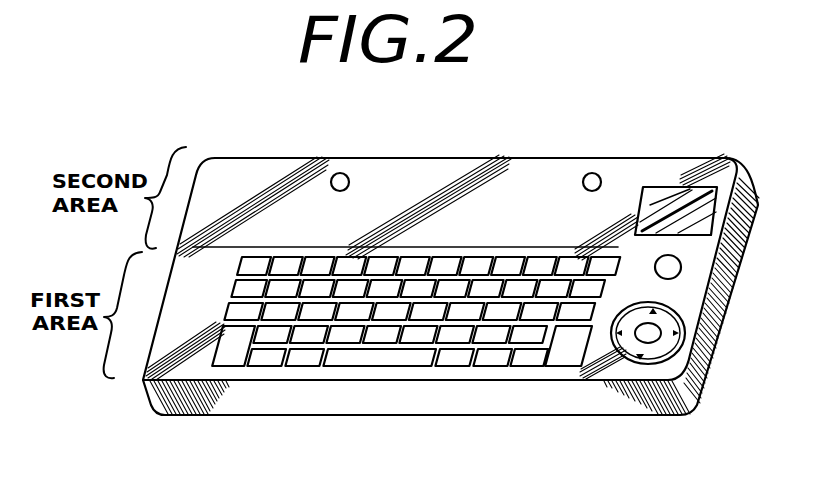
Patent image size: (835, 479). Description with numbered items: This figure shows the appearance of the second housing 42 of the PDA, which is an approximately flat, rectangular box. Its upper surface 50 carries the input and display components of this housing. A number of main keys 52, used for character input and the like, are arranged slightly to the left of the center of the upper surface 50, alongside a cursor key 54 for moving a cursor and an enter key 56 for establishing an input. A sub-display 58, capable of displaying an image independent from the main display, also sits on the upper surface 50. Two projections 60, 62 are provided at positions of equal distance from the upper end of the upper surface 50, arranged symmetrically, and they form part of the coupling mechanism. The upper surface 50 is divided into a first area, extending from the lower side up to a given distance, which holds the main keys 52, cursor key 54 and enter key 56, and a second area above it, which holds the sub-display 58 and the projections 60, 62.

The second housing 42 is at (715, 325).
The upper surface 50 is at (143, 382).
The main keys 52 is at (372, 367).
The cursor key 54 is at (627, 348).
The enter key 56 is at (680, 262).
The sub-display 58 is at (697, 190).
The projection 60 is at (342, 173).
The projection 62 is at (594, 173).